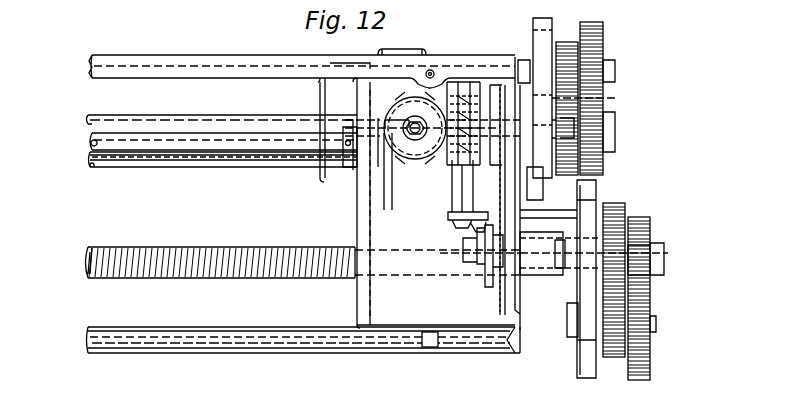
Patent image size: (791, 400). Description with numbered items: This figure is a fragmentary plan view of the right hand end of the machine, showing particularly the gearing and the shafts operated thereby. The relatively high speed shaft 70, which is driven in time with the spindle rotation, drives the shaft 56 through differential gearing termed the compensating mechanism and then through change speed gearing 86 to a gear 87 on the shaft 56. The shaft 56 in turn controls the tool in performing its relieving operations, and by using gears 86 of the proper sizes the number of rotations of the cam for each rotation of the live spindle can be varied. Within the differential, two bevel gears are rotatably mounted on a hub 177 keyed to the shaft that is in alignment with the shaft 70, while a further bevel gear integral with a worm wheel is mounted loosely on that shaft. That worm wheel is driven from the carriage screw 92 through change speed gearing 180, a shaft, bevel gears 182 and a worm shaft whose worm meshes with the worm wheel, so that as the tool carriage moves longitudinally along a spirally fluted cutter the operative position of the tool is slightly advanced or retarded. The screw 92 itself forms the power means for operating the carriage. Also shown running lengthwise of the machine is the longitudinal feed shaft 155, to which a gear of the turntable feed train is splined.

The high speed shaft 70 is at (120, 118).
The shaft 56 is at (140, 138).
The longitudinal feed shaft 155 is at (98, 167).
The screw 92 is at (192, 238).
The hub 177 is at (475, 181).
The bevel gears 182 is at (475, 228).
The change speed gearing 86 is at (600, 100).
The gear 87 is at (597, 169).
The change speed gearing 180 is at (640, 290).